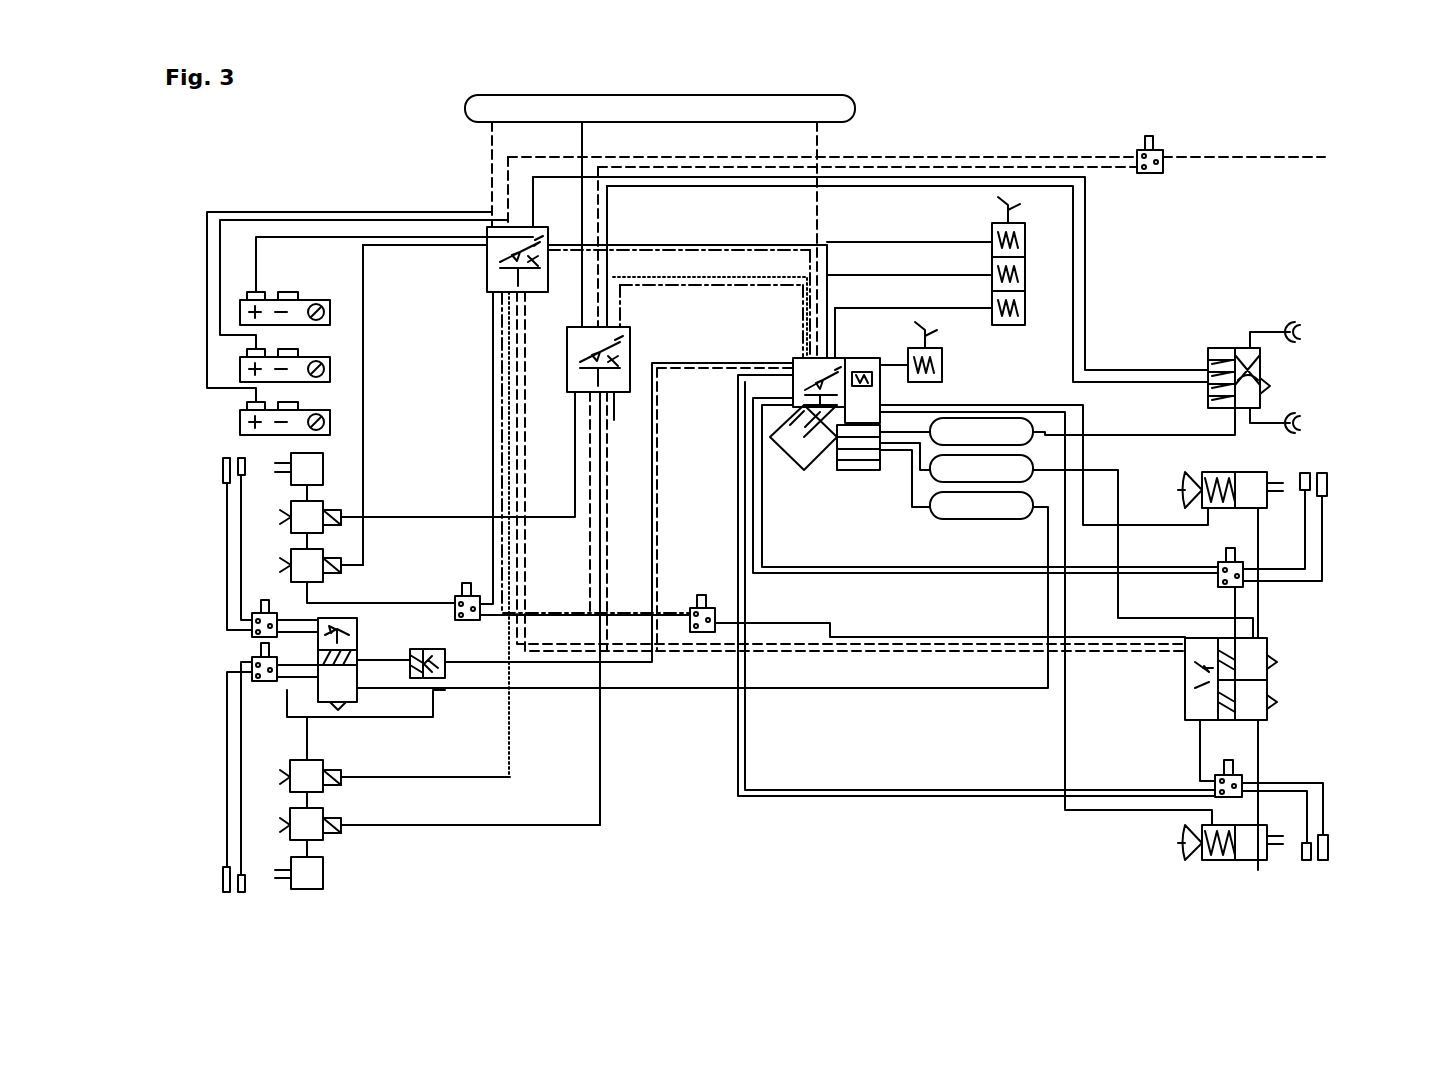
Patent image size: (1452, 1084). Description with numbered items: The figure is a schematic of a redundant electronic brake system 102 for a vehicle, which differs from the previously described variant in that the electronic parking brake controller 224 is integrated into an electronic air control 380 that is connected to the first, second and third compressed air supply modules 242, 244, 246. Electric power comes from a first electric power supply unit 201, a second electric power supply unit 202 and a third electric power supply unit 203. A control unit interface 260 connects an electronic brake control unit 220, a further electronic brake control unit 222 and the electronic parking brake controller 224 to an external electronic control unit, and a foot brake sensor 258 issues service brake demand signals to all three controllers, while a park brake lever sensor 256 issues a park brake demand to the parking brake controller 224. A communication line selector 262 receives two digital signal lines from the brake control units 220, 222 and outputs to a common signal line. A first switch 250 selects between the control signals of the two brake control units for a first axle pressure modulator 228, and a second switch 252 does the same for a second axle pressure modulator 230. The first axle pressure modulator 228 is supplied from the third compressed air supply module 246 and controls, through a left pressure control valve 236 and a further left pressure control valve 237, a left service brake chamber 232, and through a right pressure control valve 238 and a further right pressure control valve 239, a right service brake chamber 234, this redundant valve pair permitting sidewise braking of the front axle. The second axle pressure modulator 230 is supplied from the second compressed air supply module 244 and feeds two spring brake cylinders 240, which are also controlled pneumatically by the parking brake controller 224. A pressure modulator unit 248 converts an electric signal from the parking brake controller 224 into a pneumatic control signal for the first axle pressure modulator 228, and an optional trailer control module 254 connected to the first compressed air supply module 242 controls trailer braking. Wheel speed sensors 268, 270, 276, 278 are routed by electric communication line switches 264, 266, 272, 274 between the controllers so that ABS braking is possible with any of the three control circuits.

The brake system 102 is at (380, 145).
The first electric power supply unit 201 is at (330, 312).
The second electric power supply unit 202 is at (330, 369).
The third electric power supply unit 203 is at (330, 422).
The electronic brake control unit 220 is at (487, 263).
The further electronic brake control unit 222 is at (630, 345).
The electronic parking brake controller 224 is at (840, 358).
The first axle pressure modulator 228 is at (340, 618).
The second axle pressure modulator 230 is at (1267, 672).
The left service brake chamber 232 is at (323, 465).
The right service brake chamber 234 is at (307, 889).
The left pressure control valve 236 is at (291, 560).
The further left pressure control valve 237 is at (323, 505).
The right pressure control valve 238 is at (290, 770).
The further right pressure control valve 239 is at (290, 815).
The spring brake cylinders 240 is at (1260, 472).
The first compressed air supply module 242 is at (930, 438).
The second compressed air supply module 244 is at (960, 482).
The third compressed air supply module 246 is at (1010, 518).
The pressure modulator unit 248 is at (440, 678).
The first switch 250 is at (466, 583).
The second switch 252 is at (703, 595).
The trailer control module 254 is at (1235, 348).
The park brake lever sensor 256 is at (942, 367).
The foot brake sensor 258 is at (1025, 240).
The control unit interface 260 is at (855, 108).
The communication line selector 262 is at (1163, 150).
The electric communication line switch 264 is at (252, 620).
The electric communication line switch 266 is at (252, 665).
The wheel speed sensor 268 is at (223, 468).
The wheel speed sensor 270 is at (223, 880).
The electric communication line switch 272 is at (1243, 590).
The electric communication line switch 274 is at (1242, 777).
The wheel speed sensor 276 is at (1327, 485).
The wheel speed sensor 278 is at (1328, 848).
The electronic air control 380 is at (833, 480).